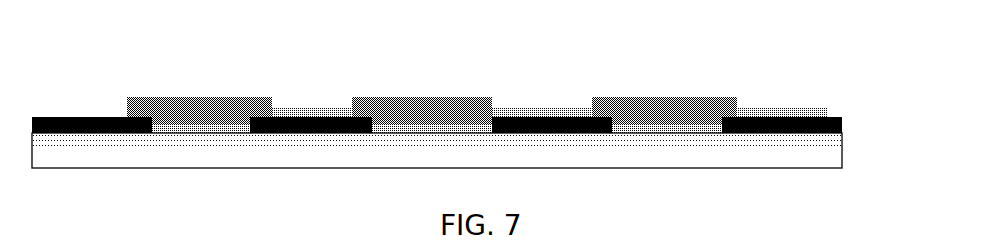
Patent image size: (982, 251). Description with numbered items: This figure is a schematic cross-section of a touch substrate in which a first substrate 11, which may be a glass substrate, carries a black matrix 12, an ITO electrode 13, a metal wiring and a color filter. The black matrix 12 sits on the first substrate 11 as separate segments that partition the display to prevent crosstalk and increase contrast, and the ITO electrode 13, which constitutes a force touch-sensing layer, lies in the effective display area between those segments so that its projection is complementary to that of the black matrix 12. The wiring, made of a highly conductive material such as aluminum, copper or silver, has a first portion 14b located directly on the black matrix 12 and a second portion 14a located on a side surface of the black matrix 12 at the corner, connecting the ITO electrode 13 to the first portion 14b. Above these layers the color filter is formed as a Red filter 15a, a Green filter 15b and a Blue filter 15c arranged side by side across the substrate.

The first substrate 11 is at (817, 152).
The black matrix 12 is at (842, 127).
The ITO electrode 13 is at (678, 128).
The second portion of the wiring 14a is at (722, 107).
The first portion of the wiring 14b is at (787, 108).
The Red filter 15a is at (208, 100).
The Green filter 15b is at (427, 102).
The Blue filter 15c is at (642, 102).